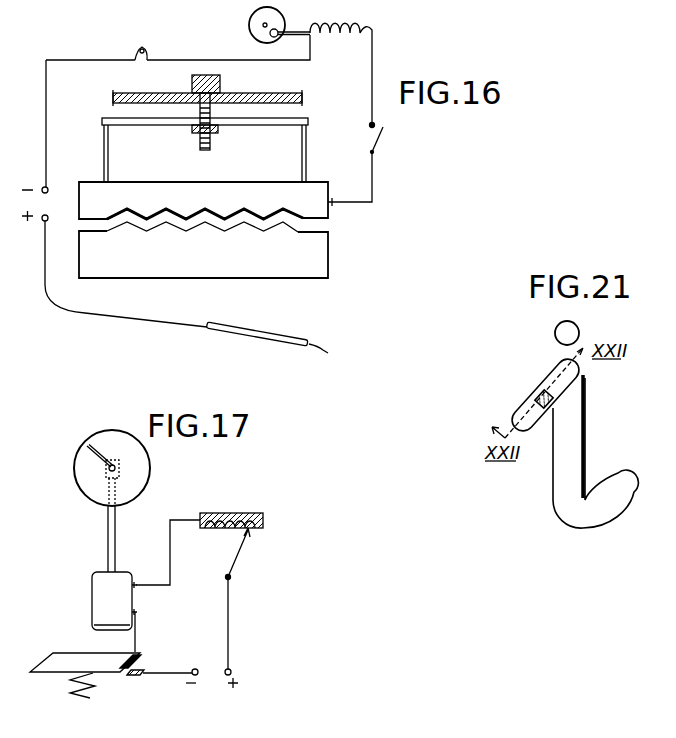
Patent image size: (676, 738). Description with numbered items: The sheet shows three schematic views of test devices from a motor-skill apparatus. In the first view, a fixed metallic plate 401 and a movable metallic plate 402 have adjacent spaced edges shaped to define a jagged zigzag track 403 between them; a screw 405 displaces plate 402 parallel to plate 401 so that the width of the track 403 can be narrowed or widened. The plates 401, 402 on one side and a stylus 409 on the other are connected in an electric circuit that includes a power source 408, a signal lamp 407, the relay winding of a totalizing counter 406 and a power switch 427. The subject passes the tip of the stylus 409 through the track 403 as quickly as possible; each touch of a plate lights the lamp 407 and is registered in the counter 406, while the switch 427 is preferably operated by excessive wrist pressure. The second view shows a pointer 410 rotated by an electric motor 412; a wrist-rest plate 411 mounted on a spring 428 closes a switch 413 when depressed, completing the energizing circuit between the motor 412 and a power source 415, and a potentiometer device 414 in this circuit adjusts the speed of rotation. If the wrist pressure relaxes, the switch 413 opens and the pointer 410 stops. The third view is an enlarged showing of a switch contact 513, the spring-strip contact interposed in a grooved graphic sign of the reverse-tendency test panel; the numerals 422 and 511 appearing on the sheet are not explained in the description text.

In FIG. 16, the metallic plate 401 is at (300, 265).
In FIG. 16, the metallic plate 402 is at (313, 205).
In FIG. 16, the zigzag track 403 is at (293, 222).
In FIG. 16, the screw 405 is at (221, 80).
In FIG. 16, the totalizing counter 406 is at (248, 25).
In FIG. 16, the signal lamp 407 is at (136, 46).
In FIG. 16, the power source 408 is at (50, 206).
In FIG. 16, the stylus 409 is at (280, 334).
In FIG. 16, the reference 422 is at (537, 10).
In FIG. 16, the power switch 427 is at (370, 134).
In FIG. 17, the pointer 410 is at (107, 453).
In FIG. 17, the wrist-rest plate 411 is at (53, 658).
In FIG. 17, the electric motor 412 is at (88, 598).
In FIG. 17, the switch 413 is at (142, 662).
In FIG. 17, the potentiometer device 414 is at (223, 513).
In FIG. 17, the power source 415 is at (205, 677).
In FIG. 17, the spring 428 is at (72, 689).
In FIG. 21, the hook 511 is at (572, 503).
In FIG. 21, the switch contact 513 is at (538, 391).